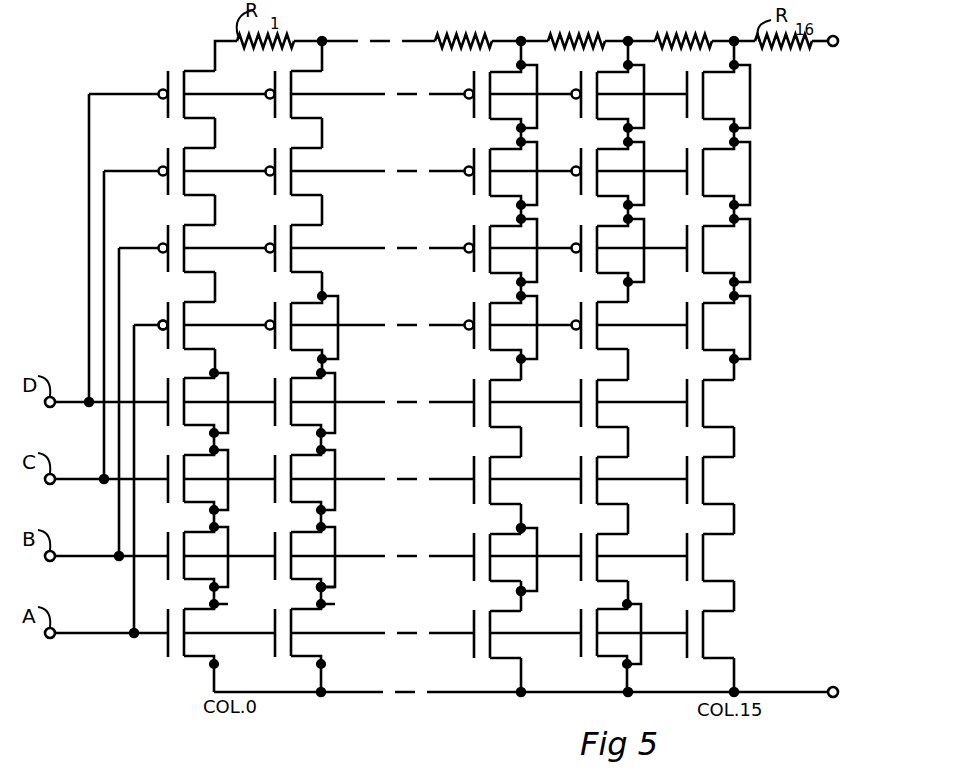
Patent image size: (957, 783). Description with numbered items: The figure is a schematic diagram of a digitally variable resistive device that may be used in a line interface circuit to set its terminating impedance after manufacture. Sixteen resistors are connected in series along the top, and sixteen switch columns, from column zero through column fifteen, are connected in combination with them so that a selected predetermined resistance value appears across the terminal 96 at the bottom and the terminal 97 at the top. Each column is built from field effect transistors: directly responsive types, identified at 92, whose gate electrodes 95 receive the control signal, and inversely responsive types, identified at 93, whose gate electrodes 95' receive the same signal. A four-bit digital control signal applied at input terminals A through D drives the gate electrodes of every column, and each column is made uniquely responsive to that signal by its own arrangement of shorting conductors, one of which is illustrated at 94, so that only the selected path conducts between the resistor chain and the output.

The directly responsive field effect transistor 92 is at (192, 660).
The inversely responsive field effect transistor 93 is at (190, 301).
The shorting conductor 94 is at (324, 590).
The gate electrode 95 is at (479, 626).
The gate electrode 95' is at (158, 351).
The terminal 96 is at (831, 687).
The terminal 97 is at (833, 48).